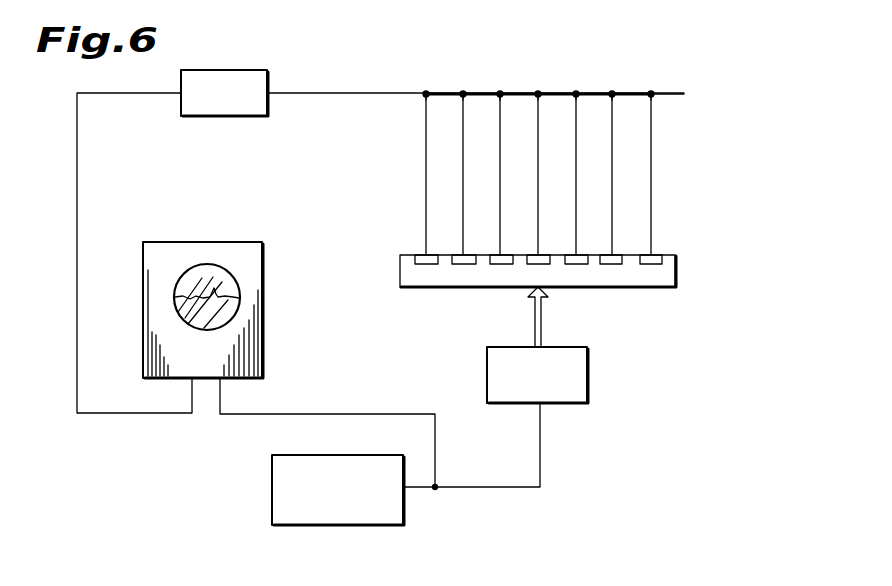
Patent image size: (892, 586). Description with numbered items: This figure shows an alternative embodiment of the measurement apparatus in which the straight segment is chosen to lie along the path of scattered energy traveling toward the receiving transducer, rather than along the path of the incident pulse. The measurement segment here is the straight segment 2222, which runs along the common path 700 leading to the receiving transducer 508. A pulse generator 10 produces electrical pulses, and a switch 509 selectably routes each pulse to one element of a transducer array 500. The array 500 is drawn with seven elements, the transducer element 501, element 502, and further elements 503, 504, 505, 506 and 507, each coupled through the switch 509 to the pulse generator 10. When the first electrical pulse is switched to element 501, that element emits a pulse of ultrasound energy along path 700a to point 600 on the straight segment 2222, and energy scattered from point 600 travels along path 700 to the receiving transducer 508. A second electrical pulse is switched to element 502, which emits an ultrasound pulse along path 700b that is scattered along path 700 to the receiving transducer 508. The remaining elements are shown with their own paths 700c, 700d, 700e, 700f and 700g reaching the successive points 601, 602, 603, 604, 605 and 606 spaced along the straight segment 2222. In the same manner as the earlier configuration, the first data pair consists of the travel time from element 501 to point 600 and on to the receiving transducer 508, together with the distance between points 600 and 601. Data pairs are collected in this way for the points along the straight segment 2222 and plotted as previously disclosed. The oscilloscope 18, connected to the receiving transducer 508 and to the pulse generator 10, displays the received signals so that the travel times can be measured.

The receiving transducer 508 is at (207, 103).
The path 700 is at (333, 95).
The path 700a is at (426, 145).
The path 700b is at (463, 163).
The wire lead 700c is at (500, 187).
The wire lead 700d is at (538, 216).
The wire lead 700e is at (651, 137).
The wire lead 700f is at (612, 160).
The wire lead 700g is at (576, 183).
The point 600 is at (426, 93).
The point 601 is at (463, 93).
The bus connection point 602 is at (500, 93).
The bus connection point 603 is at (538, 93).
The bus connection point 604 is at (576, 93).
The bus connection point 605 is at (612, 93).
The bus connection point 606 is at (651, 93).
The straight segment 2222 is at (660, 90).
The array 500 is at (676, 283).
The transducer element 501 is at (427, 265).
The element 502 is at (461, 266).
The contact pad 503 is at (500, 266).
The contact pad 504 is at (538, 266).
The contact pad 505 is at (575, 266).
The contact pad 506 is at (613, 266).
The contact pad 507 is at (657, 266).
The switch 509 is at (588, 383).
The pulse generator 10 is at (272, 496).
The oscilloscope 18 is at (262, 356).